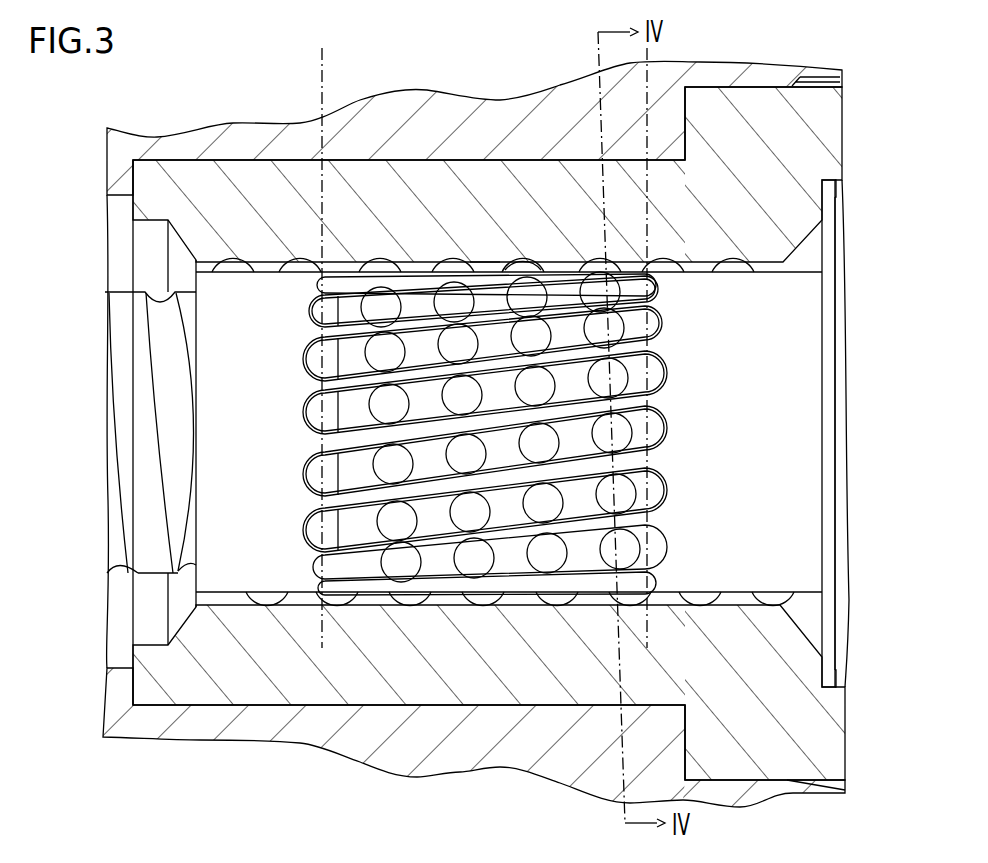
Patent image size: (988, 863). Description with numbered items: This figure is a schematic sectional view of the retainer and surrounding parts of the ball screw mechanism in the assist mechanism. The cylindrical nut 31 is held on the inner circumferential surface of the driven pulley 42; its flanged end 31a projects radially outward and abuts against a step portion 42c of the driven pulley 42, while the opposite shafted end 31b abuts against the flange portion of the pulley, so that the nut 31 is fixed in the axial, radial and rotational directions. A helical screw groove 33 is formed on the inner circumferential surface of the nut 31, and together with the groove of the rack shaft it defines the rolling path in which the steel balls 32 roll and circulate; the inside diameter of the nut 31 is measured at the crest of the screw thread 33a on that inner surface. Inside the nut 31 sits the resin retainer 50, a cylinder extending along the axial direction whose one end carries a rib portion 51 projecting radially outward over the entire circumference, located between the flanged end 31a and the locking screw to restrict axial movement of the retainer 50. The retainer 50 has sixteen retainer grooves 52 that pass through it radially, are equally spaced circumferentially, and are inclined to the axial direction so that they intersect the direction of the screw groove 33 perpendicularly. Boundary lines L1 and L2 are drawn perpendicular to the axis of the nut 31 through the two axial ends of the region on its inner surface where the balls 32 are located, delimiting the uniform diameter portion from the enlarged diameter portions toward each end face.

The nut 31 is at (234, 158).
The flanged end 31a is at (833, 106).
The shafted end 31b is at (147, 180).
The balls 32 is at (447, 280).
The screw groove 33 is at (456, 266).
The screw thread 33a is at (490, 263).
The driven pulley 42 is at (123, 139).
The step portion 42c is at (687, 732).
The retainer 50 is at (192, 581).
The rib portion 51 is at (831, 641).
The retainer grooves 52 is at (632, 374).
The boundary line L1 is at (650, 60).
The boundary line L2 is at (325, 60).